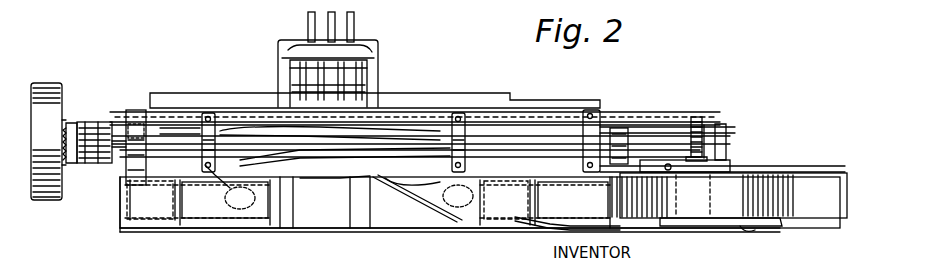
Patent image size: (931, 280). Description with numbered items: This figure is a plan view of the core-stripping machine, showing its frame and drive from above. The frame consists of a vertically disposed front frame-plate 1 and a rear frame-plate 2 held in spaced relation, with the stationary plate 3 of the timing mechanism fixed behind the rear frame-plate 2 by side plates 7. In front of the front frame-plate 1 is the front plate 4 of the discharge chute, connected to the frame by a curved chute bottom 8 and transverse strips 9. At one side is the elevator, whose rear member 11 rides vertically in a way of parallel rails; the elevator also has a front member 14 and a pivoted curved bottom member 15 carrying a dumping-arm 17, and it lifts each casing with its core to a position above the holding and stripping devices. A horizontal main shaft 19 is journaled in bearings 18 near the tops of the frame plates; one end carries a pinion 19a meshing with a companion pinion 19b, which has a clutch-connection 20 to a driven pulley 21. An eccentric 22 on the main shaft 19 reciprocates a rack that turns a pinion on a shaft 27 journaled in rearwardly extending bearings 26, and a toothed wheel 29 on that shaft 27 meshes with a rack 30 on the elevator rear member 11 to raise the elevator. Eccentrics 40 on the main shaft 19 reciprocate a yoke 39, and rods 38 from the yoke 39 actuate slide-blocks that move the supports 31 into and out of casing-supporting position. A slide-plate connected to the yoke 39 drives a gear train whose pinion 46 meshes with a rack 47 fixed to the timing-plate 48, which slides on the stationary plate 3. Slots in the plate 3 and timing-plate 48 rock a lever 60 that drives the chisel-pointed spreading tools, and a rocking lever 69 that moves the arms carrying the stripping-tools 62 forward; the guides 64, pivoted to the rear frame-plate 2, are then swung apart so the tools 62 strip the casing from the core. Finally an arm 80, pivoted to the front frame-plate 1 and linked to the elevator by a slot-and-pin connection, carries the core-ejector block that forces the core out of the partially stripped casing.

The front frame-plate 1 is at (126, 170).
The rear frame-plate 2 is at (522, 110).
The stationary plate of the timing-mechanism 3 is at (360, 50).
The front plate of the chute 4 is at (420, 229).
The side plates 7 is at (290, 68).
The curved chute bottom 8 is at (222, 229).
The transverse strips 9 is at (127, 226).
The rear member of the elevator 11 is at (722, 167).
The front member of the elevator 14 is at (700, 224).
The curved bottom member 15 is at (760, 188).
The dumping-arm 17 is at (558, 218).
The bearings 18 is at (137, 124).
The main shaft 19 is at (548, 128).
The pinion 19a is at (100, 164).
The companion pinion 19b is at (96, 121).
The clutch-connection 20 is at (72, 124).
The pulley 21 is at (46, 83).
The eccentric 22 is at (596, 116).
The bearings 26 is at (650, 128).
The shaft 27 is at (712, 130).
The toothed wheel 29 is at (702, 120).
The rack 30 is at (685, 149).
The supports 31 is at (185, 214).
The rods 38 is at (327, 200).
The yoke 39 is at (440, 110).
The eccentrics 40 is at (205, 113).
The pinion 46 is at (290, 63).
The rack 47 is at (295, 50).
The timing-plate 48 is at (350, 38).
The lever 60 is at (309, 38).
The stripping-tools 62 is at (478, 170).
The guides 64 is at (235, 130).
The rocking lever 69 is at (332, 38).
The arm 80 is at (750, 232).